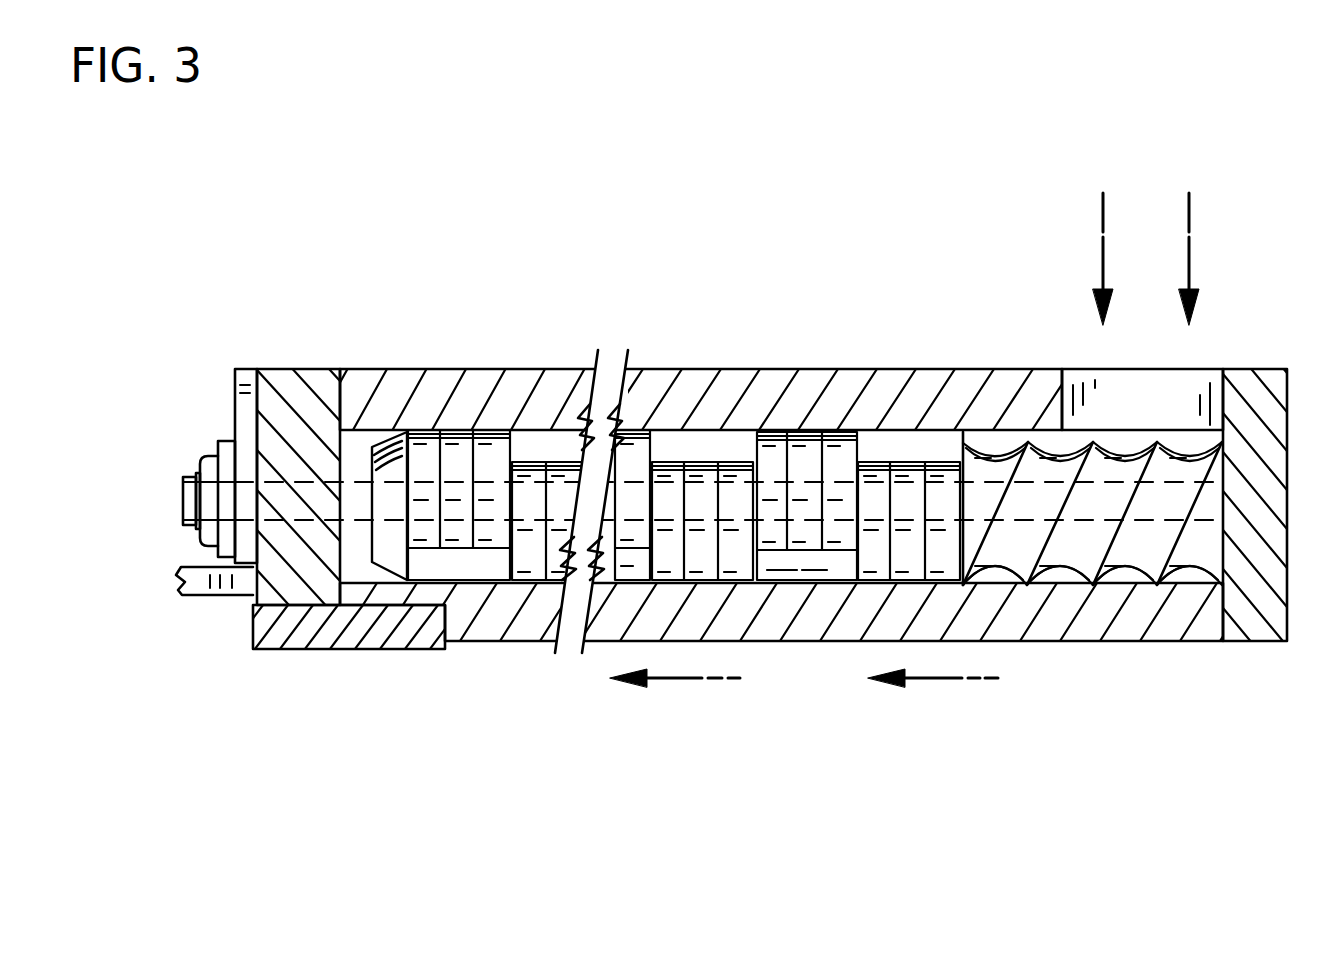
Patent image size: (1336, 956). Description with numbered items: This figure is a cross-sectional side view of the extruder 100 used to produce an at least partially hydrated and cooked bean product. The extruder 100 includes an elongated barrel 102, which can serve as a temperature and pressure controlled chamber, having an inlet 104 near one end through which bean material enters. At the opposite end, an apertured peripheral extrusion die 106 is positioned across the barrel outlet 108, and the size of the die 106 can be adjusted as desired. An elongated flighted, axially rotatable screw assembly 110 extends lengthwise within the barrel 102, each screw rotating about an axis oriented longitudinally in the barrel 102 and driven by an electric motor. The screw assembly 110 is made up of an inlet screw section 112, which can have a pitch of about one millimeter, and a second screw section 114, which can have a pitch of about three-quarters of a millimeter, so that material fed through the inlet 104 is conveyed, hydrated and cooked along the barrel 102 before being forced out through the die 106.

The extruder 100 is at (440, 304).
The barrel 102 is at (542, 432).
The inlet 104 is at (1163, 390).
The apertured peripheral extrusion die 106 is at (183, 478).
The barrel outlet 108 is at (180, 497).
The screw assembly 110 is at (963, 440).
The inlet screw section 112 is at (1168, 468).
The second screw section 114 is at (808, 450).